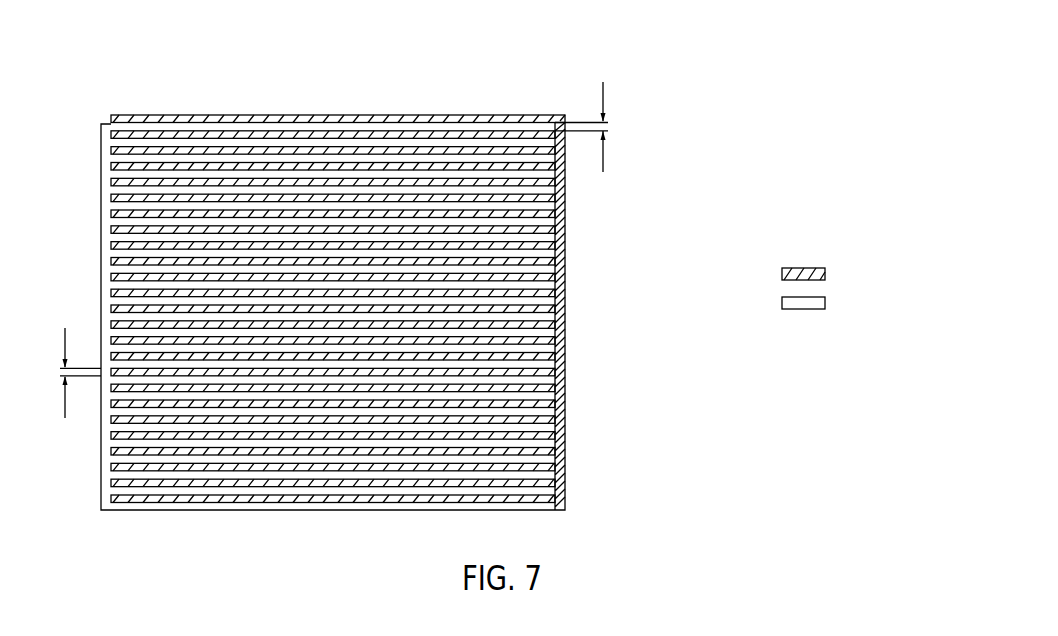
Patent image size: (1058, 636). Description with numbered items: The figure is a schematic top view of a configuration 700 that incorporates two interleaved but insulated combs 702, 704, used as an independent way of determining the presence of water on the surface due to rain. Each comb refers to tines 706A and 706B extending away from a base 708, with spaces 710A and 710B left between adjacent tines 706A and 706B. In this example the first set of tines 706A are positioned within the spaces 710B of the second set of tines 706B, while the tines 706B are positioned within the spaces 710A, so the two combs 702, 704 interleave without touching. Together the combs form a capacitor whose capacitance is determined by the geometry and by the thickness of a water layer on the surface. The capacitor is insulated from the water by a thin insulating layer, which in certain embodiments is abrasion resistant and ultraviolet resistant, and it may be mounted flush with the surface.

The configuration 700 is at (484, 273).
The first comb 702 is at (825, 273).
The second comb 704 is at (825, 302).
The first set of tines 706A is at (157, 118).
The second set of tines 706B is at (528, 127).
The base 708 is at (107, 143).
The spaces 710A is at (604, 97).
The spaces 710B is at (65, 342).